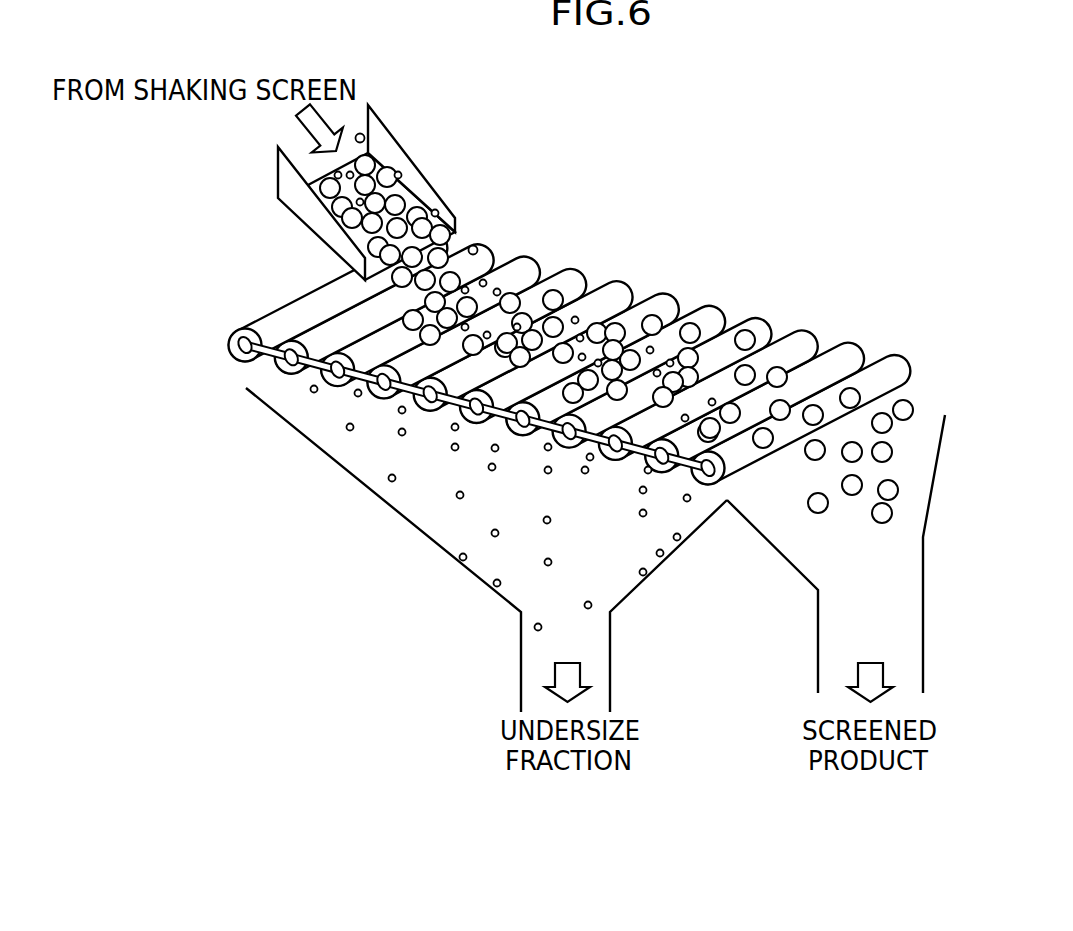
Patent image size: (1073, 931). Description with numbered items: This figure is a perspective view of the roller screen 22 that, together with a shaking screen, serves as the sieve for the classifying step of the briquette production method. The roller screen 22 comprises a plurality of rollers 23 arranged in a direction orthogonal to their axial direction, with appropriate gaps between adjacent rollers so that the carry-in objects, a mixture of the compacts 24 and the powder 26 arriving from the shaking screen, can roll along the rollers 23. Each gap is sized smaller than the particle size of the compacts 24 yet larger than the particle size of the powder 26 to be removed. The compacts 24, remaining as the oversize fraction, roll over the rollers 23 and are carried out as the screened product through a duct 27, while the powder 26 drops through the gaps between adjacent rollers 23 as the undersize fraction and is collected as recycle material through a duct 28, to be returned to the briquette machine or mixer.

The roller screen 22 is at (570, 315).
The rollers 23 is at (627, 290).
The compacts 24 is at (391, 177).
The powder 26 is at (437, 210).
The duct 27 is at (925, 598).
The duct 28 is at (610, 661).